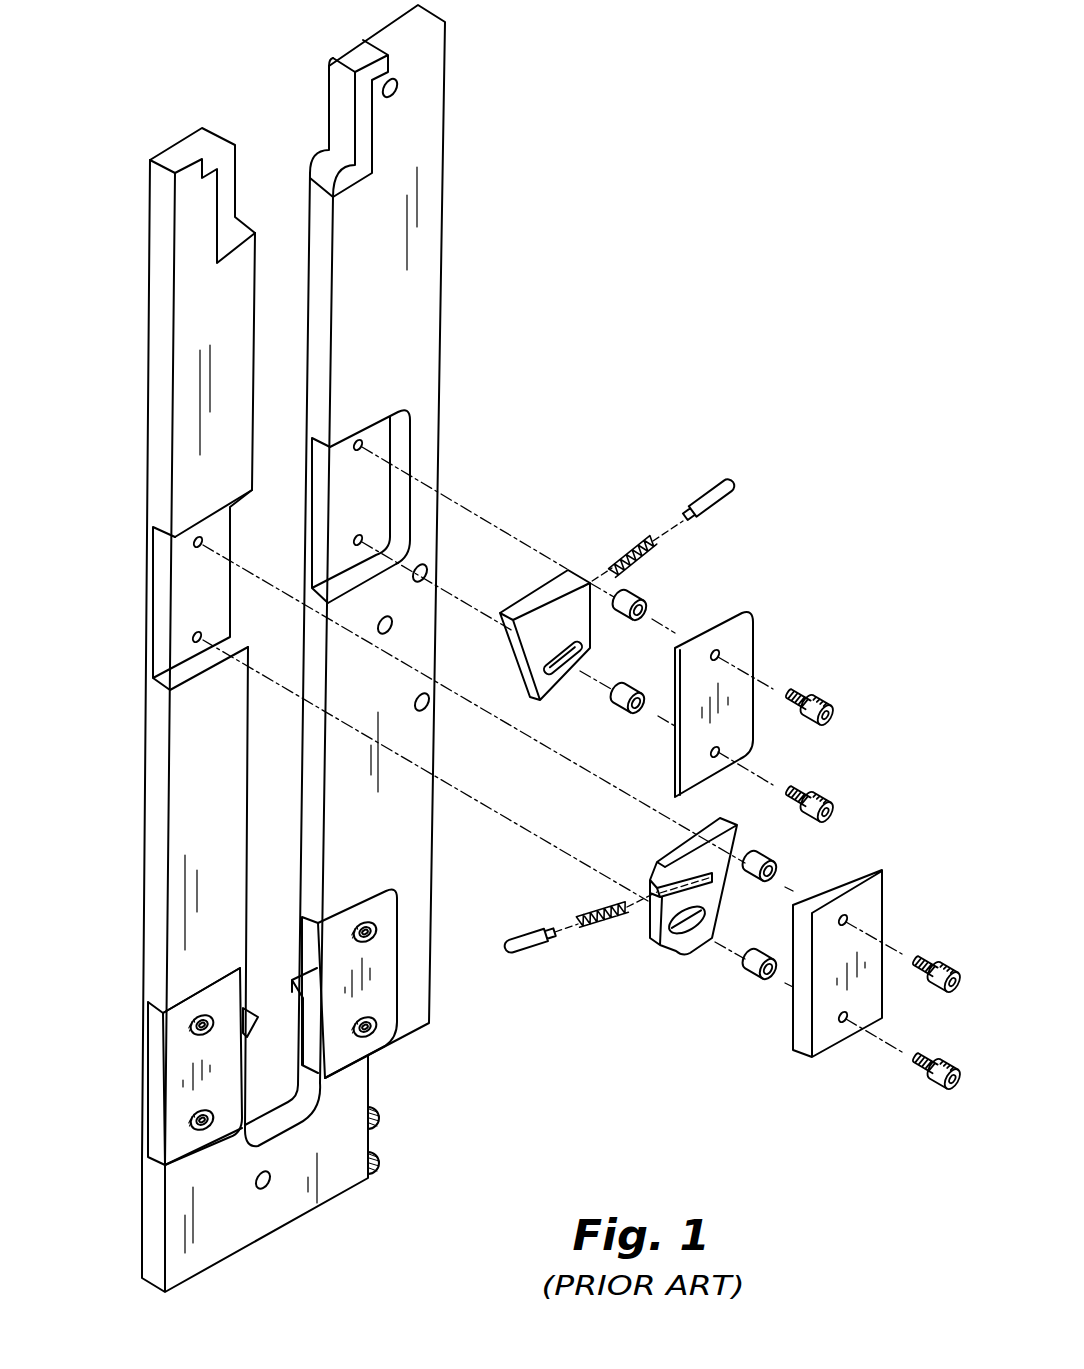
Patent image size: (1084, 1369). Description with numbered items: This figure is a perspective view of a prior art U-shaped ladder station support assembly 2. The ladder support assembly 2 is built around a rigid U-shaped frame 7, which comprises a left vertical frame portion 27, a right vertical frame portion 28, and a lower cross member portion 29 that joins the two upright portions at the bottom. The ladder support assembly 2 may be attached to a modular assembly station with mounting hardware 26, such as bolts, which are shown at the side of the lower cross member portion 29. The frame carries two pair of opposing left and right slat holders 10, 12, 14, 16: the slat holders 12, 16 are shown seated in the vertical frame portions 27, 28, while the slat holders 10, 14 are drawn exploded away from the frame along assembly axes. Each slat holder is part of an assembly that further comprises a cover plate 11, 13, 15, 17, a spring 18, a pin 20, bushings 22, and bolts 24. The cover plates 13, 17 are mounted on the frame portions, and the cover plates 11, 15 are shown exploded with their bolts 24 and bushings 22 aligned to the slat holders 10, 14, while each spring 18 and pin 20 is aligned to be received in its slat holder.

The ladder support assembly 2 is at (519, 651).
The rigid U-shaped frame 7 is at (298, 651).
The slat holder 10 is at (657, 943).
The cover plate 11 is at (818, 1041).
The slat holder 12 is at (250, 1033).
The cover plate 13 is at (178, 1127).
The slat holder 14 is at (587, 589).
The cover plate 15 is at (748, 640).
The slat holder 16 is at (313, 1008).
The cover plate 17 is at (390, 997).
The spring 18 is at (639, 538).
The pin 20 is at (703, 490).
The bushings 22 is at (657, 604).
The bolts 24 is at (794, 688).
The mounting hardware 26 is at (376, 1150).
The left vertical frame portion 27 is at (155, 426).
The right vertical frame portion 28 is at (443, 396).
The lower cross member portion 29 is at (267, 1237).